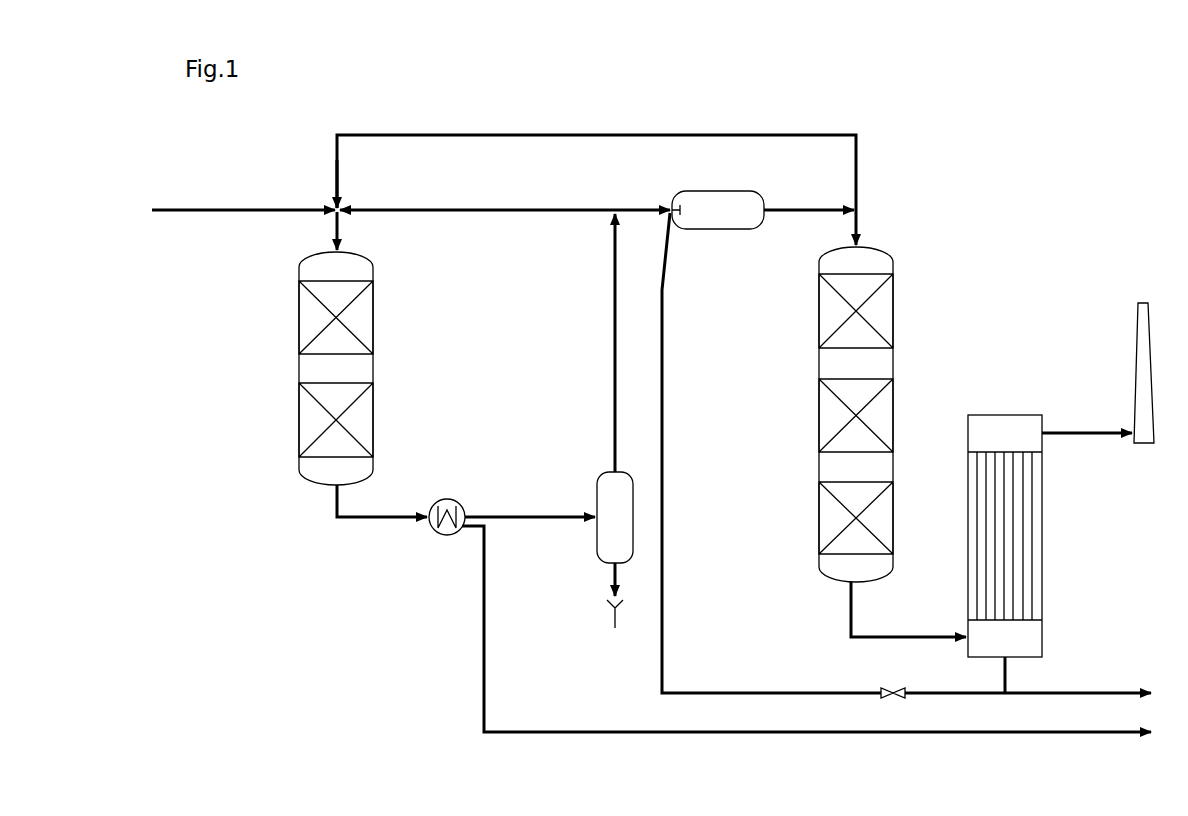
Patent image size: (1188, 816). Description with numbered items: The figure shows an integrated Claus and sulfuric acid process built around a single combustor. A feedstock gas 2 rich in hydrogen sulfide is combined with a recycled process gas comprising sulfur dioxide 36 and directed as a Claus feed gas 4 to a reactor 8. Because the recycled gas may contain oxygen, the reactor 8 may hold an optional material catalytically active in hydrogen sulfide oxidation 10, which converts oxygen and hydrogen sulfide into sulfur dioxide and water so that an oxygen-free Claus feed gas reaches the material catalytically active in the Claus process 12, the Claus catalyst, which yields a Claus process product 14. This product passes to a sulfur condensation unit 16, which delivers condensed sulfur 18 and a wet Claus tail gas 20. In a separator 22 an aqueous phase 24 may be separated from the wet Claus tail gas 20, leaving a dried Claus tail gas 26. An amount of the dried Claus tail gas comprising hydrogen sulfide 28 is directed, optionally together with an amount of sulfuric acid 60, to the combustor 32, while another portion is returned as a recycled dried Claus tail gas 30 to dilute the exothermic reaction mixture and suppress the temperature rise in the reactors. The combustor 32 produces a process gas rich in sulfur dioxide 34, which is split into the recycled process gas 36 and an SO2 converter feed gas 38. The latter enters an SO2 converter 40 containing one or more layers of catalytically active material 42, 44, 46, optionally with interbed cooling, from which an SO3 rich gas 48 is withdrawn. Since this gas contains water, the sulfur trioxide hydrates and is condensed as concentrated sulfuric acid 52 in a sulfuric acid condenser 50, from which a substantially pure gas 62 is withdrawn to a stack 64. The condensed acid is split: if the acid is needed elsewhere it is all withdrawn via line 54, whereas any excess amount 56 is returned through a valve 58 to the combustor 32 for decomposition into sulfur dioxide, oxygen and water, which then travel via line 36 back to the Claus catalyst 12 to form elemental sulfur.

The feedstock gas 2 is at (195, 207).
The Claus feed gas 4 is at (340, 218).
The reactor 8 is at (376, 266).
The material catalytically active in H2S oxidation 10 is at (378, 322).
The material catalytically active in the Claus process 12 is at (378, 418).
The Claus process product 14 is at (395, 515).
The sulfur condensation unit 16 is at (455, 499).
The condensed sulfur 18 is at (488, 582).
The wet Claus tail gas 20 is at (545, 515).
The separator 22 is at (597, 468).
The aqueous phase 24 is at (603, 588).
The dried Claus tail gas 26 is at (613, 308).
The dried Claus tail gas comprising H2S 28 is at (640, 208).
The recycled dried Claus tail gas 30 is at (507, 213).
The combustor 32 is at (690, 190).
The process gas rich in SO2 34 is at (798, 208).
The recycled process gas comprising SO2 36 is at (416, 133).
The SO2 converter feed gas 38 is at (860, 218).
The SO2 converter 40 is at (898, 262).
The layer of catalytically active material 42 is at (898, 318).
The layer of catalytically active material 44 is at (898, 403).
The layer of catalytically active material 46 is at (898, 518).
The SO3 rich gas 48 is at (915, 635).
The sulfuric acid condenser 50 is at (1046, 528).
The concentrated sulfuric acid 52 is at (1010, 684).
The sulfuric acid withdrawal line 54 is at (1093, 692).
The amount of sulfuric acid directed to combustor 56 is at (945, 692).
The valve 58 is at (885, 690).
The sulfuric acid 60 is at (708, 692).
The substantially pure gas 62 is at (1083, 432).
The stack 64 is at (1136, 340).